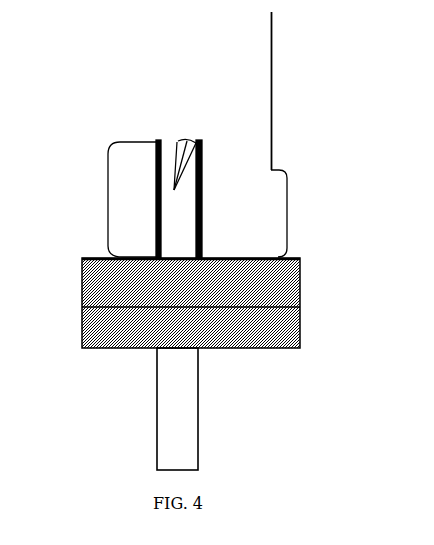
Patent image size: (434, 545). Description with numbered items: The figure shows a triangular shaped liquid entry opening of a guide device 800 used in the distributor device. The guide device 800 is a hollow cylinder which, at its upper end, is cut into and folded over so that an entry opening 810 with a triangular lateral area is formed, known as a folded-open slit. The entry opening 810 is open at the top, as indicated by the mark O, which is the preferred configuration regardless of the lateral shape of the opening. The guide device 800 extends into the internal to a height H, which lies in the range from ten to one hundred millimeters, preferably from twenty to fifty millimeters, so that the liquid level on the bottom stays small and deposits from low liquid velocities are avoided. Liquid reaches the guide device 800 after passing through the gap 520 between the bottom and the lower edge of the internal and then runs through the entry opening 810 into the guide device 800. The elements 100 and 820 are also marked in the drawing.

The probe / tip 100 is at (270, 86).
The passage (gap) 520 is at (288, 213).
The guide device 800 is at (170, 190).
The entry opening 810 is at (206, 142).
The opening 820 is at (180, 138).
The open top of the entry opening O is at (178, 140).
The height H is at (107, 191).